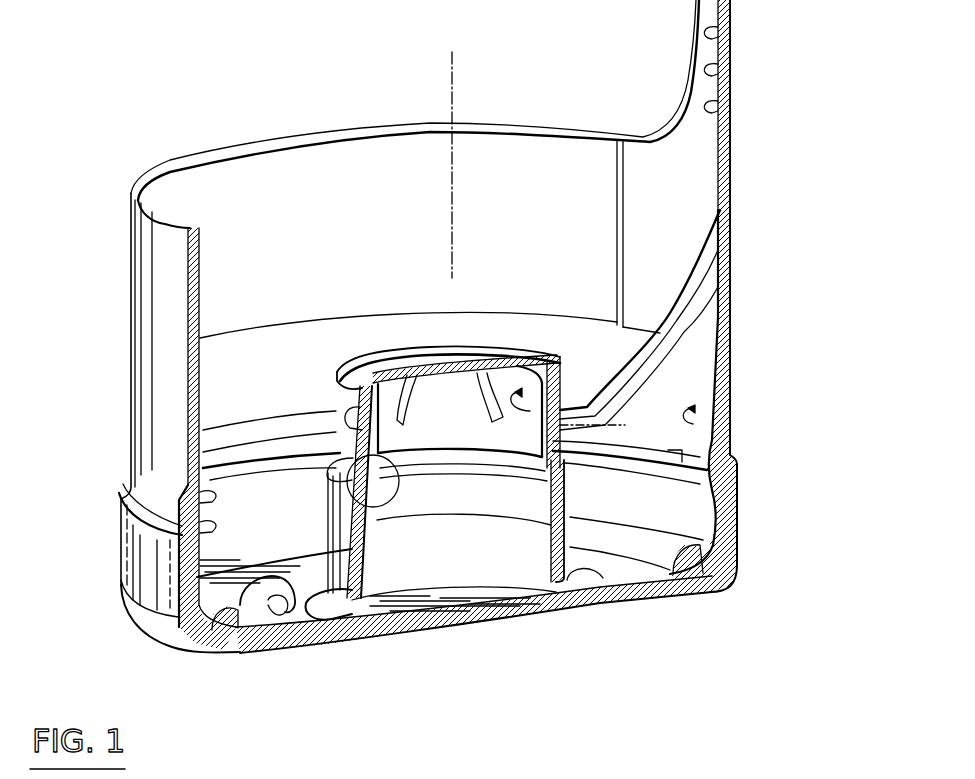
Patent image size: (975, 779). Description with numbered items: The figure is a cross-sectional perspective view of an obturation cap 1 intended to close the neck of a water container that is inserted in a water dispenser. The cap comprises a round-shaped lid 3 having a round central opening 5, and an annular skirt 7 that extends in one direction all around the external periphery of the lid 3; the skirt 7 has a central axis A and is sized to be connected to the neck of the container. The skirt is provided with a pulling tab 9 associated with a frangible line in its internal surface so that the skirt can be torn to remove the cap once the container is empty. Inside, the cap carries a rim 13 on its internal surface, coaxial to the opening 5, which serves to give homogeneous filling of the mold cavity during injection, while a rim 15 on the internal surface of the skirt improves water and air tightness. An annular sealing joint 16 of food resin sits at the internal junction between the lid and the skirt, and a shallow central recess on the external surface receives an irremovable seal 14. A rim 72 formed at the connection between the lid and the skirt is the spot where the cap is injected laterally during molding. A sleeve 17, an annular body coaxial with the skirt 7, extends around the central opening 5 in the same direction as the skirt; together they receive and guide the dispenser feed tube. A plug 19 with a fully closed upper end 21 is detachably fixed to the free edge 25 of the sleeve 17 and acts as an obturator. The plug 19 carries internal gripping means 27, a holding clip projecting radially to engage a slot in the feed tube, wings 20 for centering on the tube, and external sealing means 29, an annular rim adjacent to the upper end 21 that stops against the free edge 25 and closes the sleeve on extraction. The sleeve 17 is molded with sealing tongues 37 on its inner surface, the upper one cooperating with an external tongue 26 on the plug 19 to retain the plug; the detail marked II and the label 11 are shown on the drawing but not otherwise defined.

The obturation cap 1 is at (262, 70).
The lid 3 is at (308, 625).
The central opening 5 is at (453, 568).
The annular skirt 7 is at (173, 307).
The pulling tab 9 is at (730, 36).
The inner shelf / inclined channel 11 is at (240, 442).
The rim 13 is at (278, 603).
The irremovable seal 14 is at (660, 596).
The rim 15 is at (126, 536).
The annular sealing joint 16 is at (660, 543).
The sleeve 17 is at (515, 555).
The plug 19 is at (558, 394).
The wings 20 is at (483, 413).
The upper end 21 is at (463, 360).
The free edge 25 is at (333, 466).
The external tongue 26 is at (333, 420).
The internal gripping means 27 is at (473, 463).
The external sealing means 29 is at (558, 358).
The sealing tongues 37 is at (555, 516).
The rim 72 is at (200, 616).
The central axis A is at (453, 78).
The section detail II is at (362, 472).